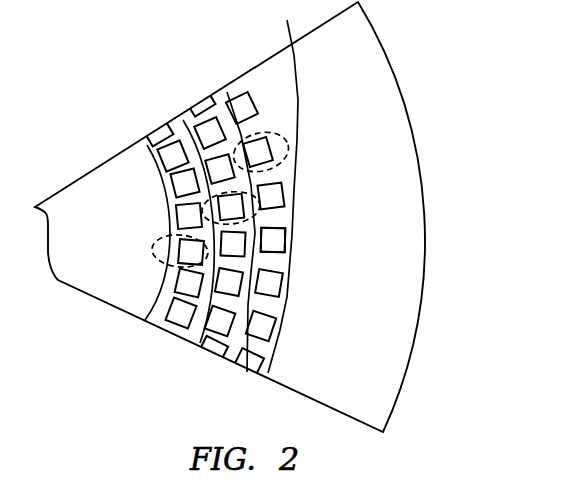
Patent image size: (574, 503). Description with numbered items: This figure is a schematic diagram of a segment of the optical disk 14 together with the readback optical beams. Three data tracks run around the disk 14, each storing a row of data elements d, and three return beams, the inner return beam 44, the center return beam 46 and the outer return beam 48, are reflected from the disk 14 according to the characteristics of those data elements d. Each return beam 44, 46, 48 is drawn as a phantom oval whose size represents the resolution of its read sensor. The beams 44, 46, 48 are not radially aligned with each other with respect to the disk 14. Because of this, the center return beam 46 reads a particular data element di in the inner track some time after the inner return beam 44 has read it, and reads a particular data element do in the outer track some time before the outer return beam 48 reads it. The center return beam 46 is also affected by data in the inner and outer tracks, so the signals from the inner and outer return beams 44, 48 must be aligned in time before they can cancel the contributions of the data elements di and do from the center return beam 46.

The optical disk 14 is at (102, 303).
The inner return beam 44 is at (144, 319).
The center return beam 46 is at (200, 343).
The outer return beam 48 is at (247, 372).
The data elements d is at (200, 372).
The data element in the inner data track di is at (186, 250).
The data element in the outer data track do is at (280, 240).